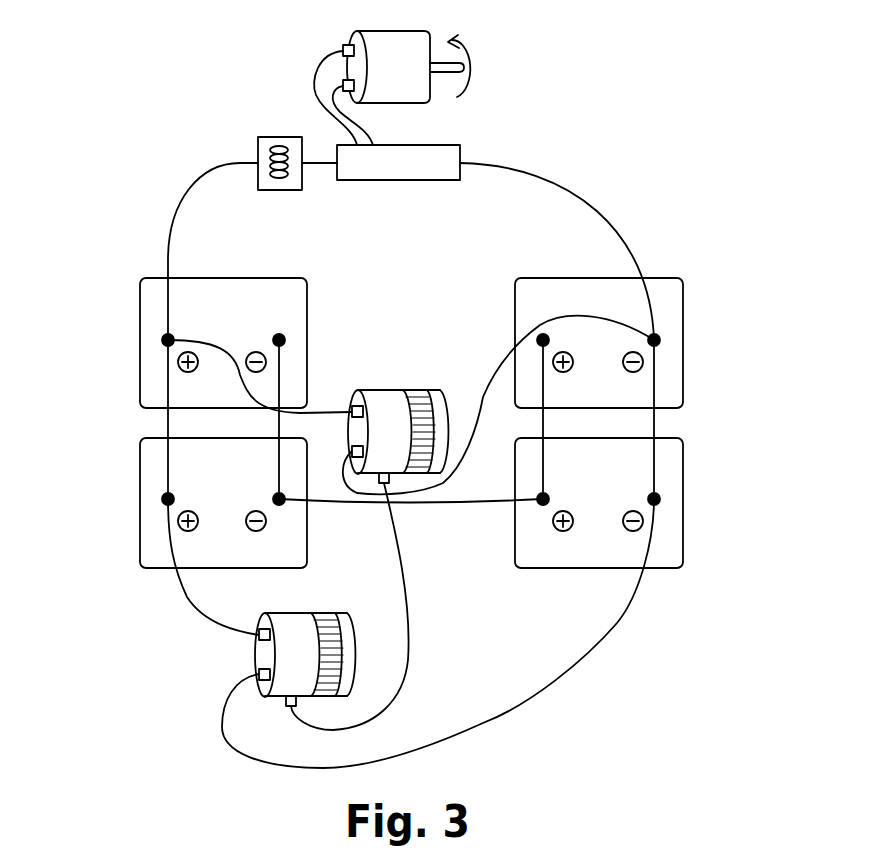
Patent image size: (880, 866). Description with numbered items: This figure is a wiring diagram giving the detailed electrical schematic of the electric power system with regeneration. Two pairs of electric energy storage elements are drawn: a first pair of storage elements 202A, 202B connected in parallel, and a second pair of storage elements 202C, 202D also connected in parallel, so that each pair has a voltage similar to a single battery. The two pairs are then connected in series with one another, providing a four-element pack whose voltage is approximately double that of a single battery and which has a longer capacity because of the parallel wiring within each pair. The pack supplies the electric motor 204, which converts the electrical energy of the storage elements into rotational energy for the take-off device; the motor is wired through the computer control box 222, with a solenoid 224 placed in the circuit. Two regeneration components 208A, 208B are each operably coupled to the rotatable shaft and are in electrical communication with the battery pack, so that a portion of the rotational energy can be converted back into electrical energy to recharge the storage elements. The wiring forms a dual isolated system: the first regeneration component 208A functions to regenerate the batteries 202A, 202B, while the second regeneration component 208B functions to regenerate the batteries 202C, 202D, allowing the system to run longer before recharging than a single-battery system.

The electric motor 204 is at (415, 84).
The computer control box 222 is at (415, 176).
The solenoid 224 is at (276, 137).
The electric energy storage element 202A is at (140, 340).
The electric energy storage element 202B is at (140, 499).
The electric energy storage element 202C is at (683, 340).
The electric energy storage element 202D is at (683, 499).
The regeneration component 208A is at (387, 390).
The regeneration component 208B is at (300, 613).